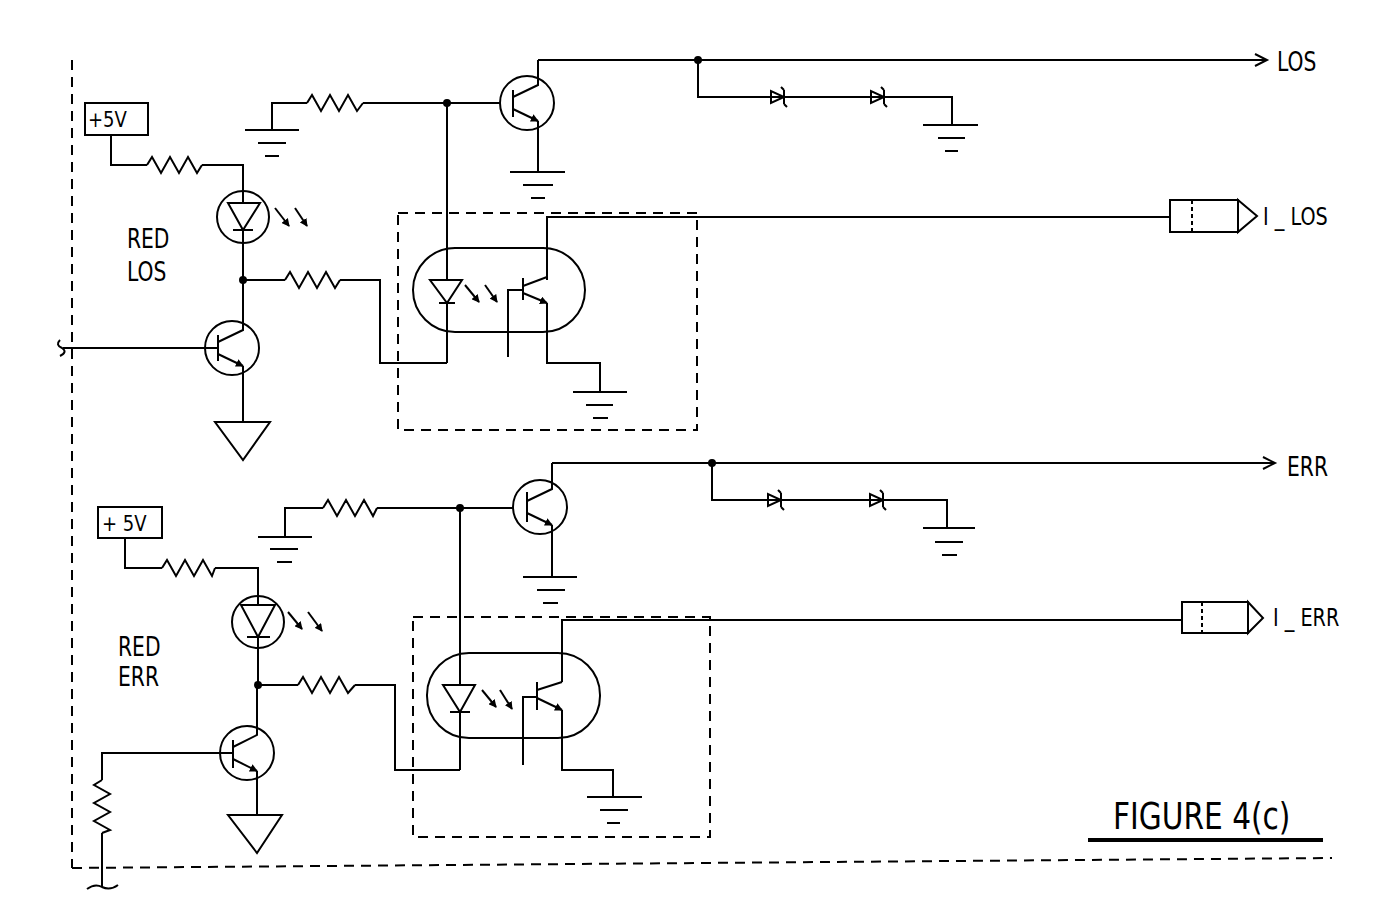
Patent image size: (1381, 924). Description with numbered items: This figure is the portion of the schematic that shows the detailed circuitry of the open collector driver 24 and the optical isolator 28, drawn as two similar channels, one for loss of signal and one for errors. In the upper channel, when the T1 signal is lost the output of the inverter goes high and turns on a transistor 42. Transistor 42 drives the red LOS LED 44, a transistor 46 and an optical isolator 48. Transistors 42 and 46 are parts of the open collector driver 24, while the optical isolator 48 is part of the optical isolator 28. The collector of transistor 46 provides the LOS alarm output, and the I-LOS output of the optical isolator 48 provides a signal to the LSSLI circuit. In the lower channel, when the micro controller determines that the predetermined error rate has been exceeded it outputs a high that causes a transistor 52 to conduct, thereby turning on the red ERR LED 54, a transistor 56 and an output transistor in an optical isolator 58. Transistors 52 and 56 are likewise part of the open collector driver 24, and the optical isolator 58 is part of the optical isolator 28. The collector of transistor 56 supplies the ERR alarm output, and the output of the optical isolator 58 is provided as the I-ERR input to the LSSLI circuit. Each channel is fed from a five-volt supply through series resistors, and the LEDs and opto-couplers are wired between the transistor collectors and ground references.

The open collector driver 24 is at (213, 120).
The optical isolator 28 is at (696, 252).
The transistor 42 is at (257, 358).
The LOS LED 44 is at (268, 196).
The transistor 46 is at (552, 112).
The optical isolator 48 is at (584, 278).
The transistor 52 is at (272, 762).
The ERR LED 54 is at (280, 603).
The transistor 56 is at (567, 517).
The optical isolator 58 is at (598, 687).